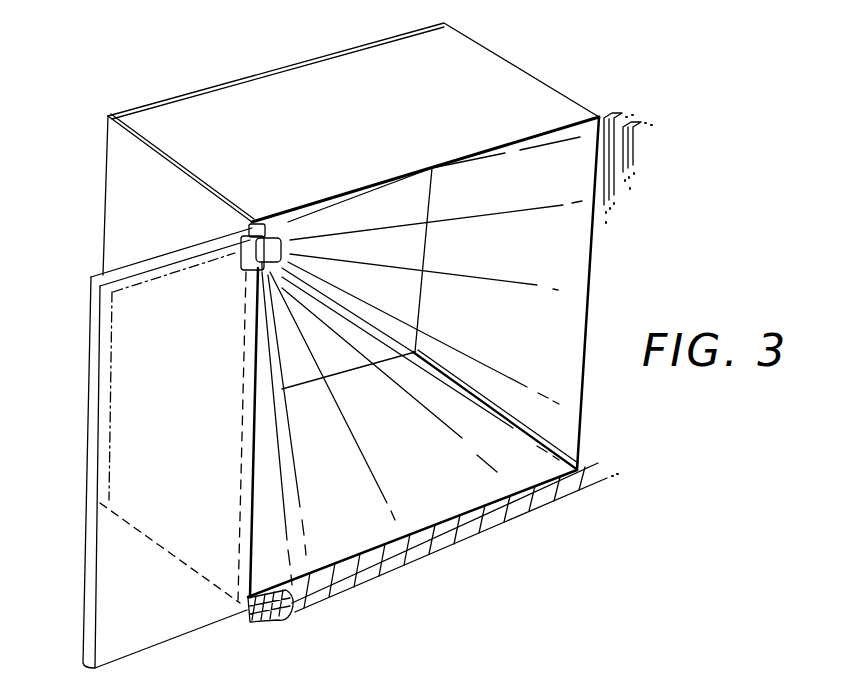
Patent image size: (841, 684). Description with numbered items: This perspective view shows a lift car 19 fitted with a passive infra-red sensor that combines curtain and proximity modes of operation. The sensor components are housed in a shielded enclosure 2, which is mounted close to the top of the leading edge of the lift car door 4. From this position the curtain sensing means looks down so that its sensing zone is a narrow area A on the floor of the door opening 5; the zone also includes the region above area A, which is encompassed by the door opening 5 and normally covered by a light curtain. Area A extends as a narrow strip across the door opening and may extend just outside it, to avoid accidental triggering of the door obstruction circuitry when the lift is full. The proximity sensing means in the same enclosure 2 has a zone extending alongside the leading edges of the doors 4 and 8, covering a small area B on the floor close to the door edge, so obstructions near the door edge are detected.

The lift car 19 is at (540, 63).
The shielded enclosure 2 is at (263, 218).
The door opening 5 is at (596, 252).
The lift car door 4 is at (88, 289).
The door 8 is at (122, 343).
The area A is at (538, 500).
The area B is at (273, 620).